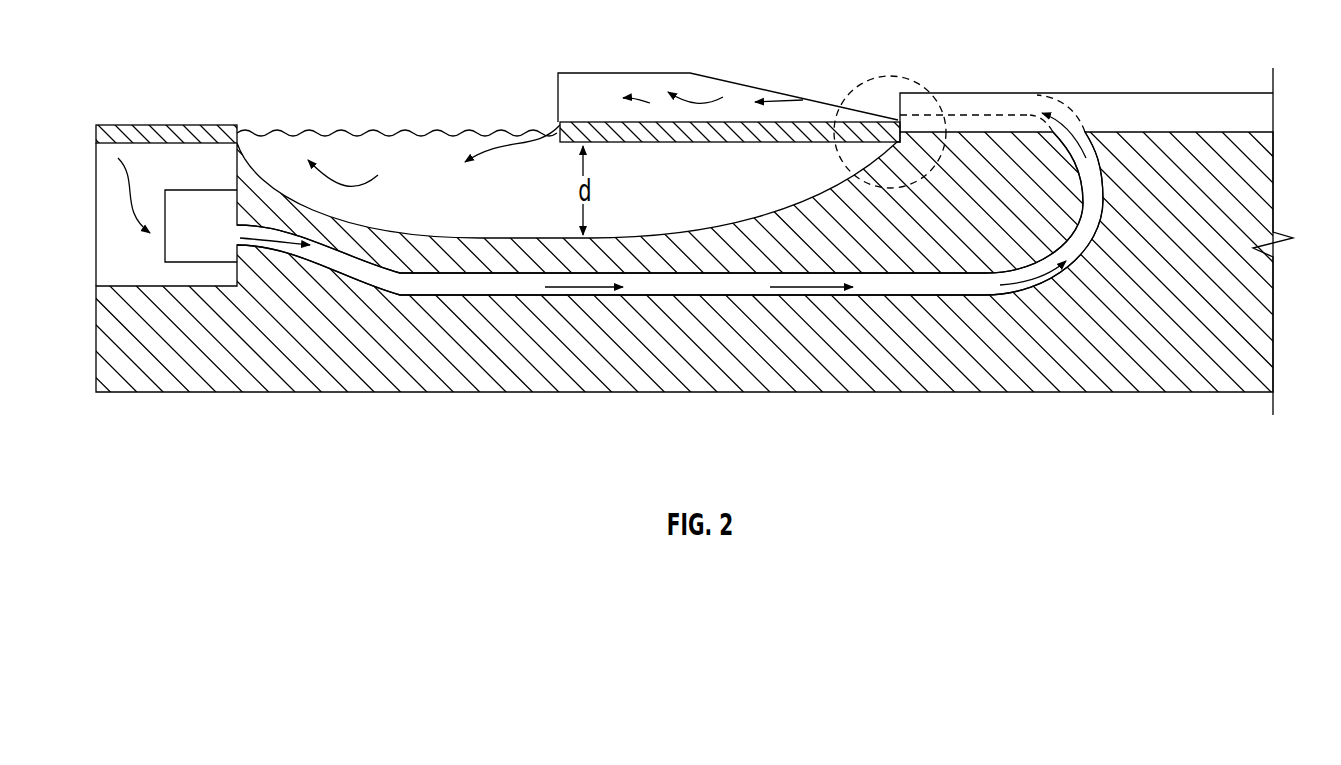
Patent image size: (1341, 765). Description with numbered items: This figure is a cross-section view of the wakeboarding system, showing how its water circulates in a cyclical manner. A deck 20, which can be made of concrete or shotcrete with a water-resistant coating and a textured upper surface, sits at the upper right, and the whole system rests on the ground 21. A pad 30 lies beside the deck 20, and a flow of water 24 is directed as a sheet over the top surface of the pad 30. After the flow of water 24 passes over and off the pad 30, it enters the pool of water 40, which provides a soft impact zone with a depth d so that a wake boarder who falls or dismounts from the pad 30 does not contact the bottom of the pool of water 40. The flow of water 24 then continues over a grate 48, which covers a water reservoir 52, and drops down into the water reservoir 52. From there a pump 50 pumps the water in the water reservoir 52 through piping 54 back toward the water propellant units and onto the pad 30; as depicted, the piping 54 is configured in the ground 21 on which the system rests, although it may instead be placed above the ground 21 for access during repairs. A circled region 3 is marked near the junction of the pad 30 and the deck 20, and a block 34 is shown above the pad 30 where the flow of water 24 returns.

The detail region 3 is at (890, 77).
The deck 20 is at (1145, 107).
The ground 21 is at (1255, 178).
The flow of water 24 is at (592, 101).
The pad 30 is at (660, 144).
The block 34 is at (602, 68).
The pool of water 40 is at (398, 145).
The grate 48 is at (160, 140).
The pump 50 is at (183, 207).
The water reservoir 52 is at (143, 252).
The piping 54 is at (913, 283).